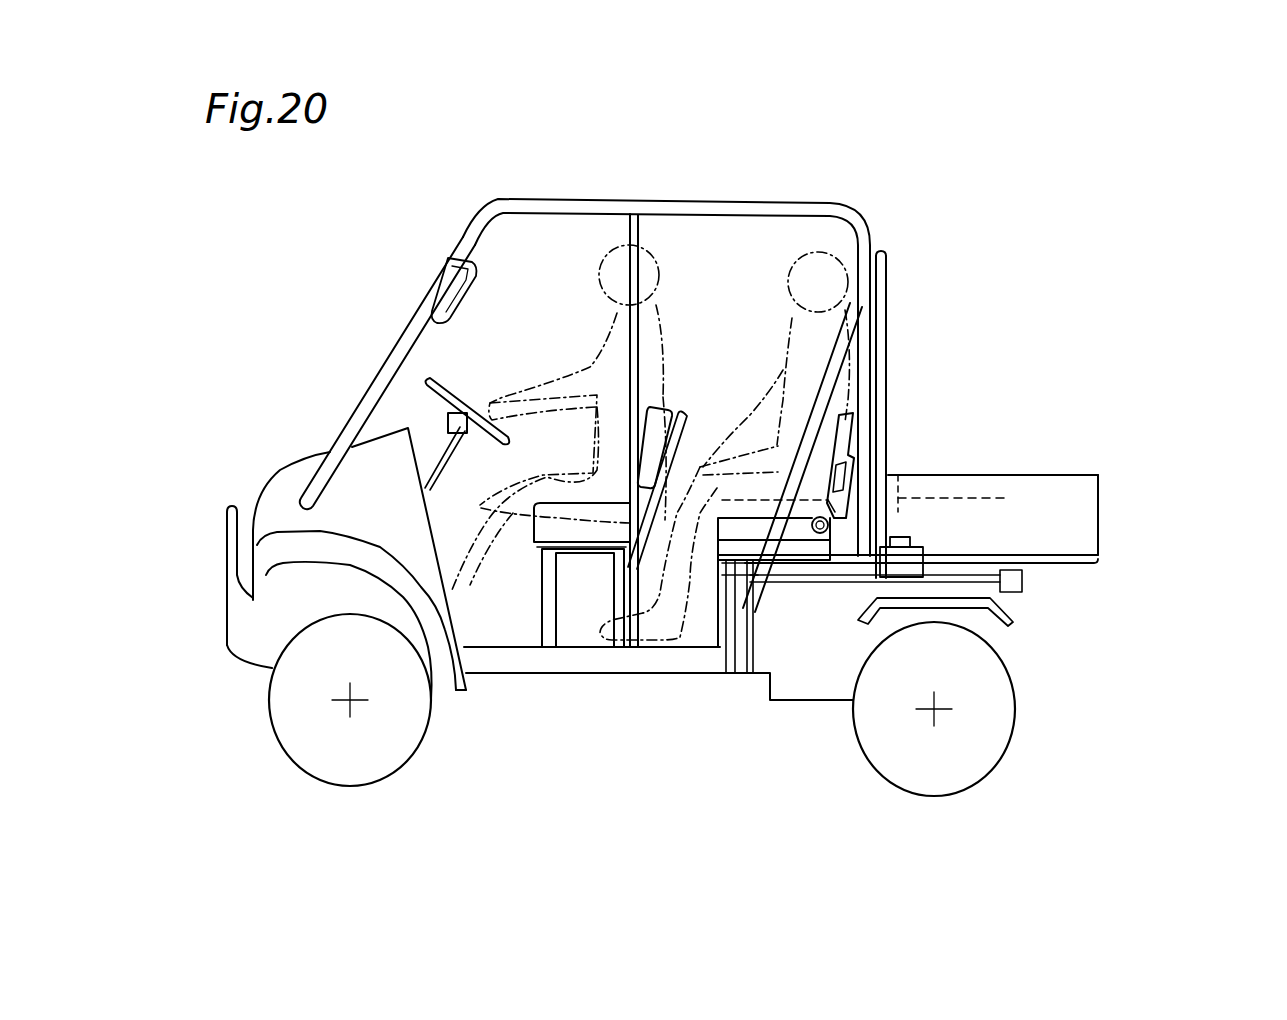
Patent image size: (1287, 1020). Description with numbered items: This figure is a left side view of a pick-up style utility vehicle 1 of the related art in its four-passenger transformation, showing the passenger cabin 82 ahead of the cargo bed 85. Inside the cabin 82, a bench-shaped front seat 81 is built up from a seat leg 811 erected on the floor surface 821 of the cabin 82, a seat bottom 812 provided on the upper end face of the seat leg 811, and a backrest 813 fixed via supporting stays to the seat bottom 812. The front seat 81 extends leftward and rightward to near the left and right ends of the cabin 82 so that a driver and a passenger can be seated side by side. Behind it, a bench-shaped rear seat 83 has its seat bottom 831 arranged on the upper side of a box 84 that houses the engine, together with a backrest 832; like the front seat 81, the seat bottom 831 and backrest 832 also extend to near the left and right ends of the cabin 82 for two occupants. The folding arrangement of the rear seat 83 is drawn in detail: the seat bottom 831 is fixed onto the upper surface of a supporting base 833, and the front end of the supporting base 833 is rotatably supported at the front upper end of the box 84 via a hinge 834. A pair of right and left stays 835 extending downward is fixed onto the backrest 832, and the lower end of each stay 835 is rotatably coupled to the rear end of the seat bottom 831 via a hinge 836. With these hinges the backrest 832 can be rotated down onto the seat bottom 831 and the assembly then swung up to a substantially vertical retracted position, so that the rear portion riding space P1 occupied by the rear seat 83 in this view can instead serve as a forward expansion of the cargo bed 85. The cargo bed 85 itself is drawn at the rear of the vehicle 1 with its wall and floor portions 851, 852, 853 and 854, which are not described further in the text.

The utility vehicle 1 is at (830, 192).
The front seat 81 is at (530, 545).
The seat leg 811 is at (543, 637).
The seat bottom 812 is at (556, 513).
The backrest 813 is at (668, 400).
The cabin 82 is at (476, 345).
The floor surface 821 is at (587, 650).
The rear seat 83 is at (740, 517).
The seat bottom 831 is at (790, 540).
The backrest 832 is at (848, 430).
The supporting base 833 is at (690, 648).
The hinge 834 is at (735, 575).
The stays 835 is at (846, 481).
The hinge 836 is at (832, 522).
The box 84 is at (779, 660).
The cargo bed 85 is at (1075, 471).
The bed bottom plate 851 is at (1082, 566).
The bed side wall 852 is at (1038, 475).
The tail gate 853 is at (1100, 513).
The bed front wall 854 is at (985, 496).
The rear portion riding space P1 is at (771, 463).